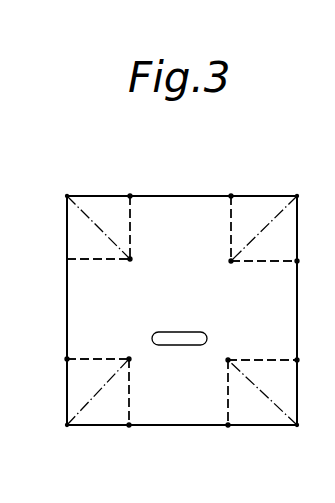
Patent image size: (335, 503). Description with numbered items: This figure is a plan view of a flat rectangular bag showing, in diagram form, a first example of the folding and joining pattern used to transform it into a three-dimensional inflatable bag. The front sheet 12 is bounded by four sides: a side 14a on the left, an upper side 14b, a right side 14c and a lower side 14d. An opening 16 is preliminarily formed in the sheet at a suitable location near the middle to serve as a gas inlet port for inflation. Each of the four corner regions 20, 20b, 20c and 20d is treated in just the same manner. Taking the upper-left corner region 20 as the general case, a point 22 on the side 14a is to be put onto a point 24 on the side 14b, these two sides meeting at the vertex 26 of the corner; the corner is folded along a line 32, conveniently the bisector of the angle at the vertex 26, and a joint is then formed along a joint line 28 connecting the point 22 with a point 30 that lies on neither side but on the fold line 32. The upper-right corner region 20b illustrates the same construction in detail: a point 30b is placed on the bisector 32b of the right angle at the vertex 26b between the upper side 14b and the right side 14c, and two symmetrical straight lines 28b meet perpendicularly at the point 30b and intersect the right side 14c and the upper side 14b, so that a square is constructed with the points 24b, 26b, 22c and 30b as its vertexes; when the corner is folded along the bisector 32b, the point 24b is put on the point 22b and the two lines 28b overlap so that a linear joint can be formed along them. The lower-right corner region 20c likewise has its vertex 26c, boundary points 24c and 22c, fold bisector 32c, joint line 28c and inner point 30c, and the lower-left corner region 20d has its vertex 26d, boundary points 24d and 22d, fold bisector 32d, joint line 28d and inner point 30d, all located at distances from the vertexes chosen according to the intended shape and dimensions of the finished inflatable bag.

The front sheet 12 is at (156, 294).
The side 14a is at (67, 309).
The upper side 14b is at (188, 196).
The right side 14c is at (297, 308).
The side 14d is at (170, 425).
The opening 16 is at (180, 337).
The corner region 20 is at (102, 196).
The corner region 20b is at (262, 196).
The corner region 20c is at (228, 396).
The corner region 20d is at (97, 360).
The point 22 is at (67, 259).
The point 22b is at (297, 261).
The point 22c is at (297, 360).
The point 22d is at (67, 359).
The point 24 is at (131, 196).
The point 24b is at (229, 200).
The point 24c is at (228, 425).
The point 24d is at (129, 425).
The vertex 26 is at (67, 196).
The vertex 26b is at (297, 196).
The vertex 26c is at (297, 425).
The vertex 26d is at (67, 425).
The joint line 28 is at (130, 216).
The straight lines 28b is at (231, 238).
The joint line 28c is at (268, 360).
The joint line 28d is at (129, 375).
The point 30 is at (130, 259).
The point 30b is at (231, 261).
The point 30c is at (228, 360).
The point 30d is at (129, 359).
The line 32 is at (85, 212).
The bisector 32b is at (262, 220).
The bisector 32c is at (272, 393).
The bisector 32d is at (103, 388).